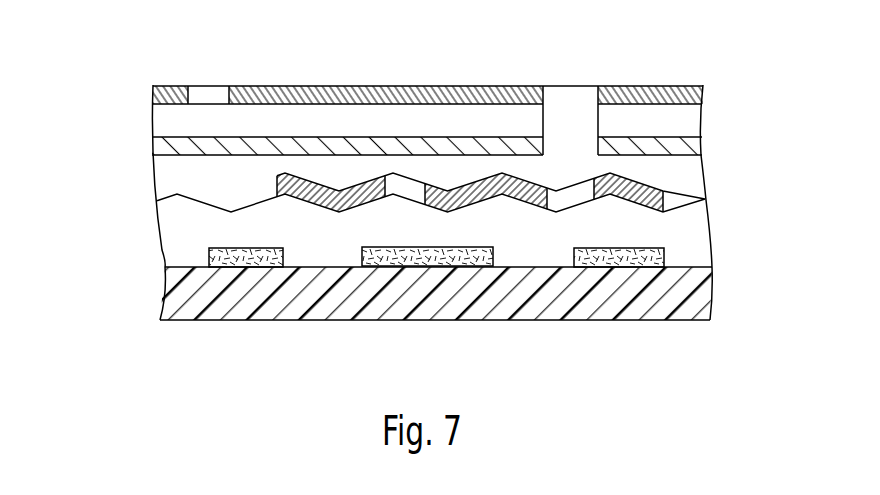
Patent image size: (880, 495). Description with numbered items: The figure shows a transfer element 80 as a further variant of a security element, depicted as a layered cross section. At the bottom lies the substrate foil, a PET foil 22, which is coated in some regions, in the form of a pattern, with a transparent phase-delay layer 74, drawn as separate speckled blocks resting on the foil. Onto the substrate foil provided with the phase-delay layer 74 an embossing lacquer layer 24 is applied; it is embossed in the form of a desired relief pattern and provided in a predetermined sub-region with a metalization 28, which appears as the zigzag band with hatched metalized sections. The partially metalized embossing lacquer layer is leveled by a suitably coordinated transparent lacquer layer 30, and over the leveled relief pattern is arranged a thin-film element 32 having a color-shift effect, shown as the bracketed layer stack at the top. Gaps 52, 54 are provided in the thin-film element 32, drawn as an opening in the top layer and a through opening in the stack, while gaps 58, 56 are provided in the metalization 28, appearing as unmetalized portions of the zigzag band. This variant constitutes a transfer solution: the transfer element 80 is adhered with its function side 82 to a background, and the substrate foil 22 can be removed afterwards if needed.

The transfer element 80 is at (104, 77).
The function side 82 is at (406, 70).
The thin-film element 32 is at (715, 85).
The gap 52 is at (210, 98).
The gap 54 is at (572, 97).
The transparent lacquer layer 30 is at (688, 177).
The metalization 28 is at (702, 200).
The gap 58 is at (410, 192).
The gap 56 is at (566, 198).
The embossing lacquer layer 24 is at (695, 235).
The phase-delay layer 74 is at (627, 258).
The PET foil 22 is at (695, 295).